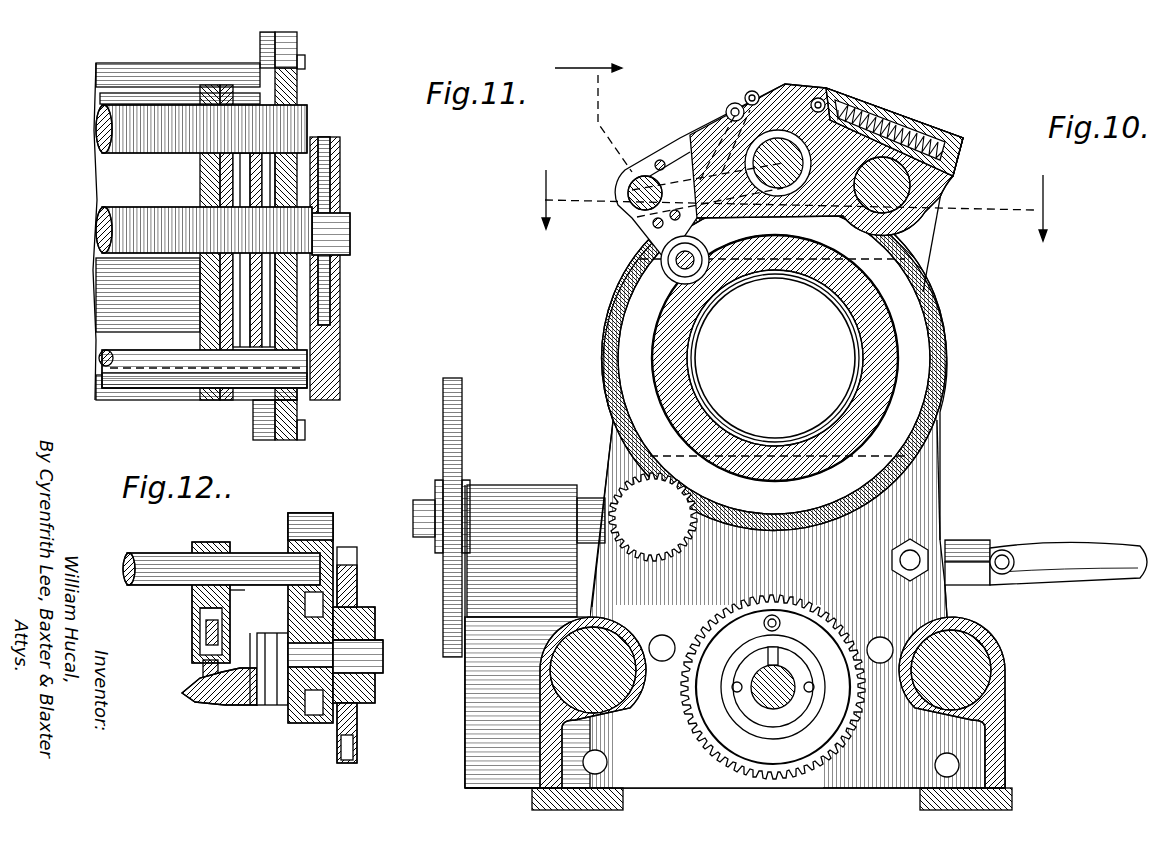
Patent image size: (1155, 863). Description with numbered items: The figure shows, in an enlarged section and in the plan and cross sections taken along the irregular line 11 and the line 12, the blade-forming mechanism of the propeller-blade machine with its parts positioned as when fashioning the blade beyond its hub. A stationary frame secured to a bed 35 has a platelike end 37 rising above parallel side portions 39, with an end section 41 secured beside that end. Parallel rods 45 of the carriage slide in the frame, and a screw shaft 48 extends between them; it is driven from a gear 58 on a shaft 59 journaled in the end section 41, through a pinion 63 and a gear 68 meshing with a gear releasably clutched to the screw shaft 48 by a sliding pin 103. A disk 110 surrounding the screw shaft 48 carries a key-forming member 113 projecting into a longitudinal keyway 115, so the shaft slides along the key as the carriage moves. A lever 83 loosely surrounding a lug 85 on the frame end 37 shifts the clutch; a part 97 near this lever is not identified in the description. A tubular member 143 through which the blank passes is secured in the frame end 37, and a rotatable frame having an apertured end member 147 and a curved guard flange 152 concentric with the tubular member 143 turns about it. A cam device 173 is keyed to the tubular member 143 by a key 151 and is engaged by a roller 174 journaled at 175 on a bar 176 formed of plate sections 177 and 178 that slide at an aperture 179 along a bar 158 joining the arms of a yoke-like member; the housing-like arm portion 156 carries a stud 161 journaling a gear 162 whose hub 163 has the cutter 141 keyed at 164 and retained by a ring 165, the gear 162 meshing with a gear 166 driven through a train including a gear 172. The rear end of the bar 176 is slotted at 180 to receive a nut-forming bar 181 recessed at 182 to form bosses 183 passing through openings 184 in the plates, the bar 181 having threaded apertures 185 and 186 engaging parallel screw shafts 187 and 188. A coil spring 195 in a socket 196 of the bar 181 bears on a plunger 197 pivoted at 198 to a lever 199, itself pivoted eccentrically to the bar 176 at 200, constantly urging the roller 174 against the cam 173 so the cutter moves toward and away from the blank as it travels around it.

In FIG. 10, the section line 11 is at (795, 205).
In FIG. 10, the section line 12 is at (593, 104).
In FIG. 10, the bed 35 is at (530, 803).
In FIG. 10, the platelike end 37 is at (935, 470).
In FIG. 10, the side portions 39 is at (613, 626).
In FIG. 10, the end section 41 is at (492, 708).
In FIG. 10, the rods 45 is at (566, 672).
In FIG. 10, the screw shaft 48 is at (750, 694).
In FIG. 10, the gear 58 is at (452, 396).
In FIG. 10, the shaft 59 is at (420, 508).
In FIG. 10, the pinion 63 is at (592, 500).
In FIG. 10, the gear 68 is at (798, 575).
In FIG. 10, the lever 83 is at (1113, 556).
In FIG. 10, the lug 85 is at (962, 548).
In FIG. 10, the lever pivot 97 is at (1009, 556).
In FIG. 10, the pin 103 is at (772, 614).
In FIG. 10, the disk 110 is at (745, 712).
In FIG. 10, the key-forming member 113 is at (781, 657).
In FIG. 10, the keyway 115 is at (768, 668).
In FIG. 12, the cutter 141 is at (358, 742).
In FIG. 10, the tubular member 143 is at (701, 394).
In FIG. 11, the end member 147 is at (286, 60).
In FIG. 10, the key 151 is at (774, 445).
In FIG. 10, the guard flange 152 is at (610, 322).
In FIG. 11, the guard flange 152 is at (110, 68).
In FIG. 11, the arm portion 156 is at (318, 140).
In FIG. 12, the arm portion 156 is at (290, 540).
In FIG. 10, the bar 158 is at (628, 190).
In FIG. 11, the bar 158 is at (142, 365).
In FIG. 12, the bar 158 is at (153, 554).
In FIG. 12, the stud 161 is at (368, 652).
In FIG. 12, the gear 162 is at (313, 722).
In FIG. 12, the hub 163 is at (370, 641).
In FIG. 12, the key 164 is at (360, 708).
In FIG. 12, the ring 165 is at (372, 612).
In FIG. 11, the gear 166 is at (330, 200).
In FIG. 10, the gear 172 is at (656, 543).
In FIG. 10, the cam device 173 is at (638, 393).
In FIG. 11, the cam device 173 is at (105, 302).
In FIG. 10, the roller 174 is at (668, 258).
In FIG. 12, the roller 174 is at (205, 672).
In FIG. 10, the journal 175 is at (676, 262).
In FIG. 12, the journal 175 is at (204, 645).
In FIG. 11, the bar 176 is at (207, 90).
In FIG. 12, the bar 176 is at (200, 618).
In FIG. 12, the plate section 177 is at (192, 597).
In FIG. 12, the plate section 178 is at (232, 590).
In FIG. 12, the aperture 179 is at (205, 545).
In FIG. 11, the slot 180 is at (270, 312).
In FIG. 11, the nut-forming bar 181 is at (200, 168).
In FIG. 11, the annular recesses 182 is at (265, 295).
In FIG. 11, the circular bosses 183 is at (235, 265).
In FIG. 11, the openings 184 is at (252, 278).
In FIG. 11, the threaded aperture 185 is at (228, 90).
In FIG. 11, the threaded aperture 186 is at (223, 234).
In FIG. 10, the screw shaft 187 is at (882, 213).
In FIG. 11, the screw shaft 187 is at (128, 110).
In FIG. 10, the screw shaft 188 is at (778, 172).
In FIG. 11, the screw shaft 188 is at (204, 230).
In FIG. 10, the coil spring 195 is at (886, 116).
In FIG. 10, the socket 196 is at (936, 128).
In FIG. 10, the plunger 197 is at (838, 98).
In FIG. 10, the pivot 198 is at (818, 97).
In FIG. 10, the lever 199 is at (790, 92).
In FIG. 10, the pivotal connection 200 is at (751, 91).